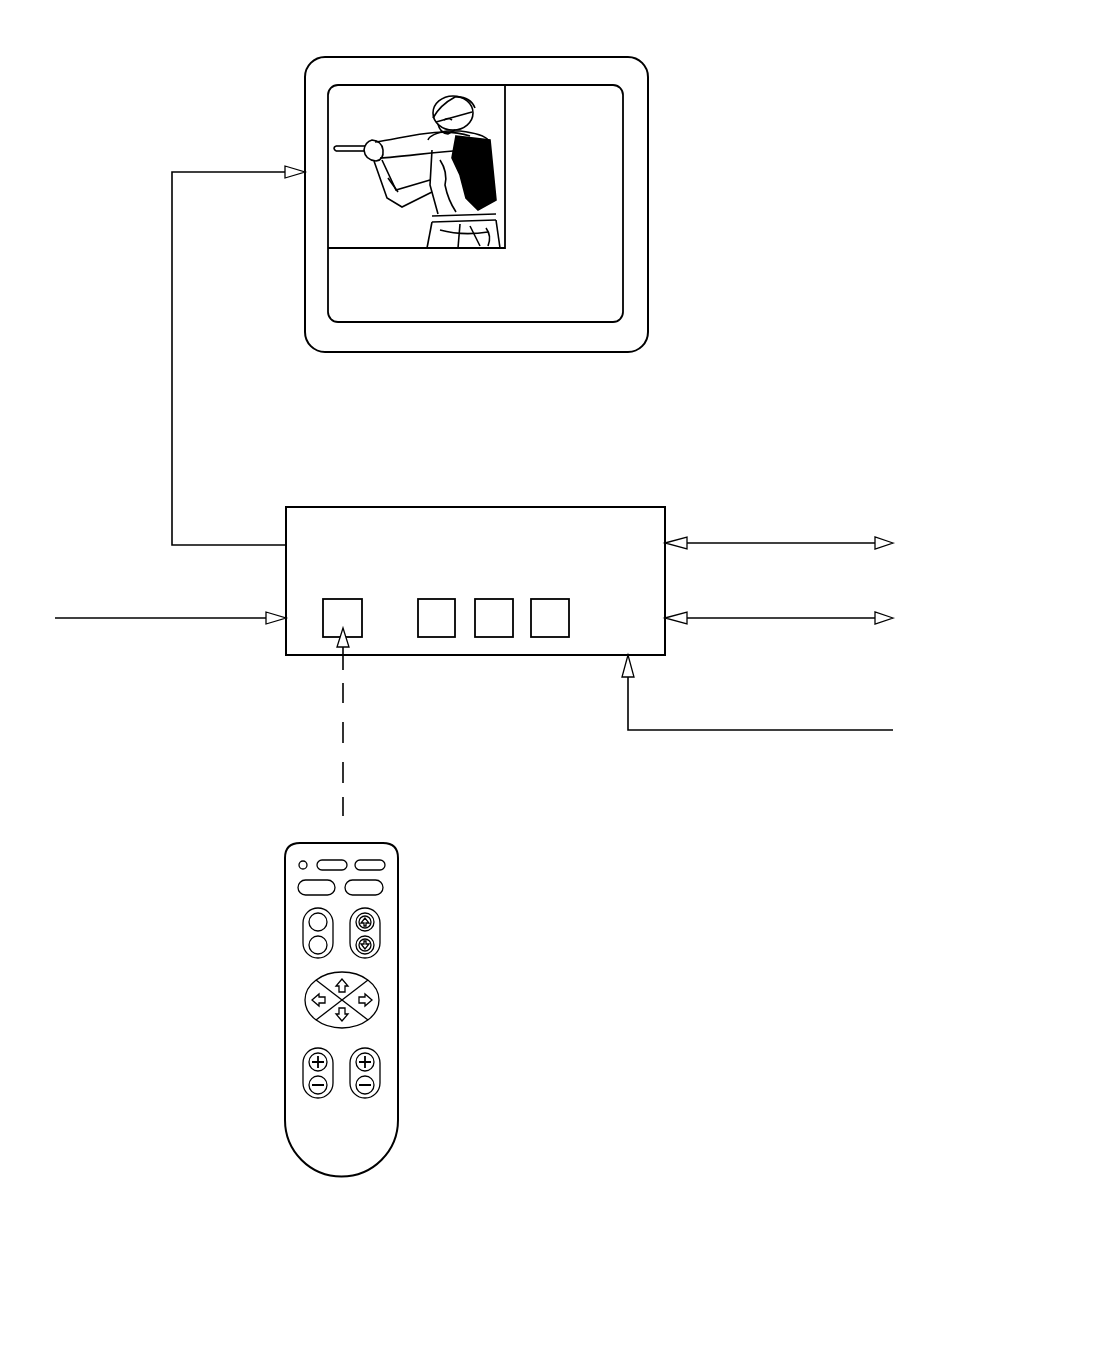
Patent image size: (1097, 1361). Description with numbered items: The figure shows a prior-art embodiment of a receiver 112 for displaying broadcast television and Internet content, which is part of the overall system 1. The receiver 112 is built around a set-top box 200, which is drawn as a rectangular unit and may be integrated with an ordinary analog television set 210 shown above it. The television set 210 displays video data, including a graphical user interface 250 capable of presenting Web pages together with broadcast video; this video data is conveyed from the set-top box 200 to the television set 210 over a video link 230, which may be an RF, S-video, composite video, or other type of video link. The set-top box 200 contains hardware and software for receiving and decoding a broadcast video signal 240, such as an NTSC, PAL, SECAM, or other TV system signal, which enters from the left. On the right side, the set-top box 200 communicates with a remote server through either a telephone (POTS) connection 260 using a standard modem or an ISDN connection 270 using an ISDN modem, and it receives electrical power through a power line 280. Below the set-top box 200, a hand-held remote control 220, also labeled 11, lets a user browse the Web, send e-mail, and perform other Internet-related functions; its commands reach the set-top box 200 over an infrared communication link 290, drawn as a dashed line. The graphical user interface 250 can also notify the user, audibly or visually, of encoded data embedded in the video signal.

The interactive television system 1 is at (713, 926).
The receiver 112 is at (792, 48).
The television set 210 is at (650, 188).
The graphical user interface 250 is at (577, 265).
The video link 230 is at (172, 432).
The set-top box 200 is at (657, 647).
The broadcast video signal 240 is at (133, 618).
The telephone connection 260 is at (712, 543).
The ISDN connection 270 is at (743, 618).
The power line 280 is at (698, 730).
The infrared communication link 290 is at (342, 690).
The remote control 220 is at (398, 953).
The remote control 11 is at (354, 1150).